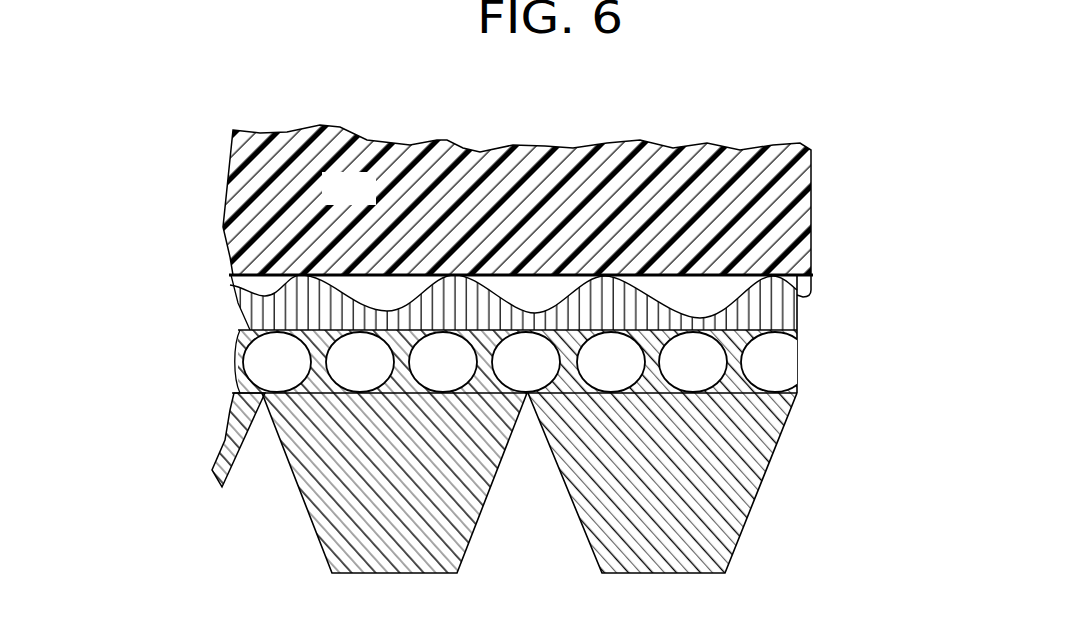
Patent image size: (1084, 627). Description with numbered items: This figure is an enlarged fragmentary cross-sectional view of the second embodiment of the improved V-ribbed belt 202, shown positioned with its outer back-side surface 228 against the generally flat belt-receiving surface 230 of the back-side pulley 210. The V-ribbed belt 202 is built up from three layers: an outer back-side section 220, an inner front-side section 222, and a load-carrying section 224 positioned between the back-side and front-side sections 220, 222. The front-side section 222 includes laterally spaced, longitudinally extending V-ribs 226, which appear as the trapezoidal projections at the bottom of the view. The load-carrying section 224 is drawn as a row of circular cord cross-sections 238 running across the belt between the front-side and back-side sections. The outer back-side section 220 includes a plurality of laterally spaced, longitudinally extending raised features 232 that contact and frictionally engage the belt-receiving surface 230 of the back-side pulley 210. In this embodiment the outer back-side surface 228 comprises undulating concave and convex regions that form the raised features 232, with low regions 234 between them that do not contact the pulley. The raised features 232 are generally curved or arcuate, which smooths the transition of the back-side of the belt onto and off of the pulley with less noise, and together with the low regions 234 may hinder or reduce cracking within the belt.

The V-ribbed belt 202 is at (815, 439).
The back-side pulley 210 is at (371, 202).
The outer back-side section 220 is at (238, 322).
The inner front-side section 222 is at (230, 425).
The load-carrying section 224 is at (235, 357).
The V-ribs 226 is at (580, 493).
The outer back-side surface 228 is at (230, 285).
The belt-receiving surface 230 is at (388, 274).
The raised features 232 is at (567, 266).
The low regions 234 is at (553, 320).
The tensile cords 238 is at (433, 372).